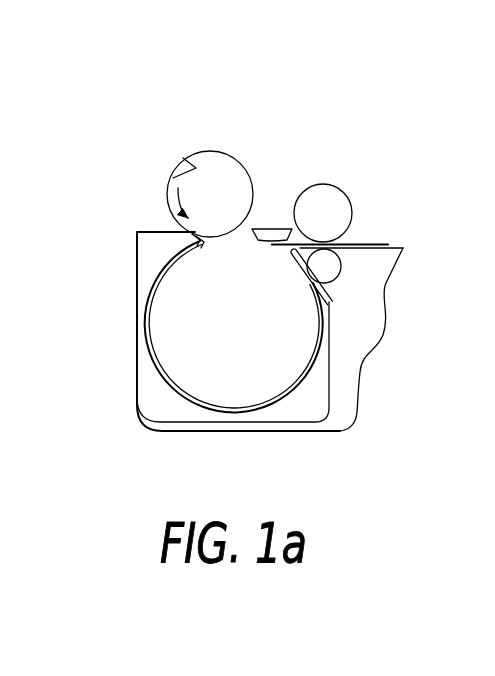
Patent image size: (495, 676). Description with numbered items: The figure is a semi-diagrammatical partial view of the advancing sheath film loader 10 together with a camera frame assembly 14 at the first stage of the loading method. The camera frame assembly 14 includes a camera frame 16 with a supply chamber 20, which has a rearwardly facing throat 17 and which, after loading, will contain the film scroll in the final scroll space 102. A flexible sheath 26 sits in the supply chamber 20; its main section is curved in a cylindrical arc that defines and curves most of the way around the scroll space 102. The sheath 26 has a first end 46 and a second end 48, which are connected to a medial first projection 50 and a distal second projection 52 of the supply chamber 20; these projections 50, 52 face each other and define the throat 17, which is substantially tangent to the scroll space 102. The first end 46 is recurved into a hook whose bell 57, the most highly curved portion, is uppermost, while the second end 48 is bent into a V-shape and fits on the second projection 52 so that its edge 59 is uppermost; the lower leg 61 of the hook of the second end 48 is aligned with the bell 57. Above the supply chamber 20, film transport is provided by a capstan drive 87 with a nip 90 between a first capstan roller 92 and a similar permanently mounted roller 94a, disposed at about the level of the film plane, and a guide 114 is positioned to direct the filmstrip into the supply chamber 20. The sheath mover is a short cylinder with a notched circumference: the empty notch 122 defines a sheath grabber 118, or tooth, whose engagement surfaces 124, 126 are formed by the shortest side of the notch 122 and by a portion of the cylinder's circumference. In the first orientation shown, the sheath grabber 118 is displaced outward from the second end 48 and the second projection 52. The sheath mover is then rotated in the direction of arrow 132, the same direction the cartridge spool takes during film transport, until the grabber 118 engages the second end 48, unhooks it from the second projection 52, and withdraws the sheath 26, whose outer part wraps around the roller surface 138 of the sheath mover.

The advancing sheath film loader 10 is at (322, 116).
The camera frame assembly 14 is at (136, 351).
The camera frame 16 is at (183, 331).
The throat 17 is at (259, 221).
The supply chamber 20 is at (322, 389).
The flexible sheath 26 is at (181, 390).
The first end 46 is at (298, 250).
The second end 48 is at (203, 240).
The first projection 50 is at (339, 195).
The second projection 52 is at (192, 236).
The bell 57 is at (287, 250).
The edge 59 is at (198, 236).
The lower leg 61 is at (201, 264).
The capstan drive 87 is at (383, 222).
The nip 90 is at (354, 237).
The first capstan roller 92 is at (362, 194).
The roller 94a is at (342, 270).
The final scroll space 102 is at (295, 348).
The guide 114 is at (272, 228).
The sheath grabber 118 is at (126, 137).
The notch 122 is at (163, 176).
The engagement surface 124 is at (126, 137).
The engagement surface 126 is at (192, 170).
The arrow 132 is at (192, 230).
The roller surface 138 is at (228, 174).